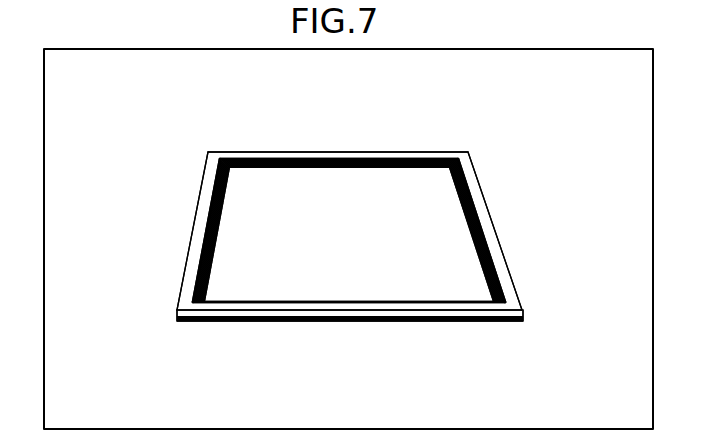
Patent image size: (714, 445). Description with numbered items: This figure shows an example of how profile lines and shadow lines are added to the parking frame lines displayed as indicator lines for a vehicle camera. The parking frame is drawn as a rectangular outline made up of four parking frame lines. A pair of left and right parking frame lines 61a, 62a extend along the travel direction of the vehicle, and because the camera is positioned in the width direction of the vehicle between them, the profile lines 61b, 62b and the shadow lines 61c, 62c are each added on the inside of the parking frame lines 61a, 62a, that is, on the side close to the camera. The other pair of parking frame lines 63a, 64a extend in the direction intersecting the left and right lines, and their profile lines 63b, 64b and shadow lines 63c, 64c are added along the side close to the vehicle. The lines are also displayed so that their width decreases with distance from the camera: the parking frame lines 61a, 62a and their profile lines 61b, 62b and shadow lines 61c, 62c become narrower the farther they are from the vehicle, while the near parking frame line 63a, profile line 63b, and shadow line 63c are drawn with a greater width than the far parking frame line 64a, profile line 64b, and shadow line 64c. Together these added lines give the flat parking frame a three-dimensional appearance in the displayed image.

The parking frame line 61a is at (200, 222).
The profile line 61b is at (203, 285).
The shadow line 61c is at (220, 202).
The parking frame line 62a is at (485, 215).
The profile line 62b is at (470, 232).
The shadow line 62c is at (468, 209).
The parking frame line 63a is at (320, 306).
The profile line 63b is at (280, 322).
The shadow line 63c is at (335, 323).
The parking frame line 64a is at (323, 153).
The profile line 64b is at (278, 162).
The shadow line 64c is at (433, 165).